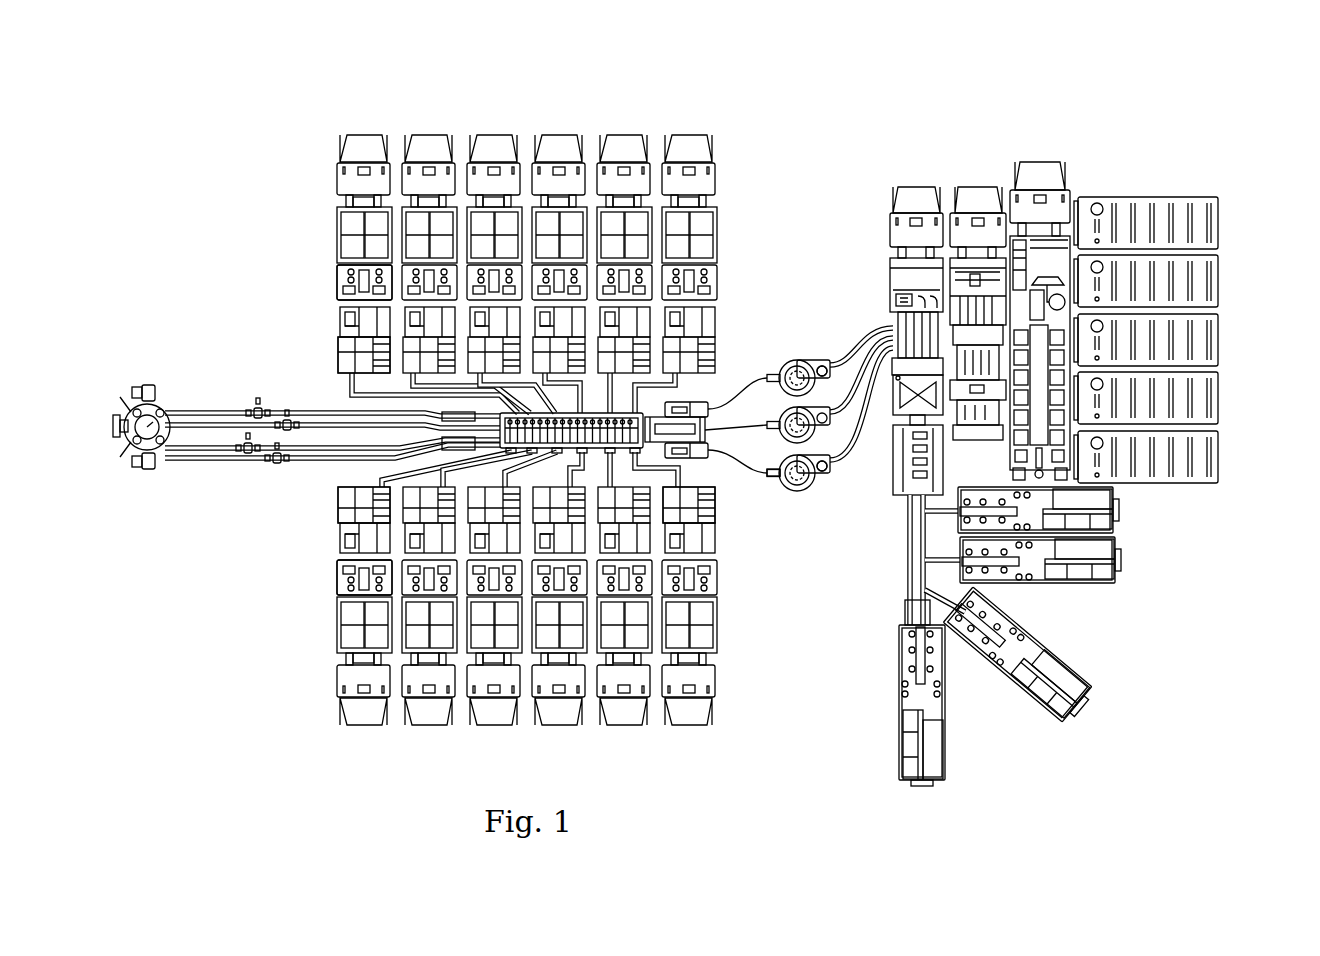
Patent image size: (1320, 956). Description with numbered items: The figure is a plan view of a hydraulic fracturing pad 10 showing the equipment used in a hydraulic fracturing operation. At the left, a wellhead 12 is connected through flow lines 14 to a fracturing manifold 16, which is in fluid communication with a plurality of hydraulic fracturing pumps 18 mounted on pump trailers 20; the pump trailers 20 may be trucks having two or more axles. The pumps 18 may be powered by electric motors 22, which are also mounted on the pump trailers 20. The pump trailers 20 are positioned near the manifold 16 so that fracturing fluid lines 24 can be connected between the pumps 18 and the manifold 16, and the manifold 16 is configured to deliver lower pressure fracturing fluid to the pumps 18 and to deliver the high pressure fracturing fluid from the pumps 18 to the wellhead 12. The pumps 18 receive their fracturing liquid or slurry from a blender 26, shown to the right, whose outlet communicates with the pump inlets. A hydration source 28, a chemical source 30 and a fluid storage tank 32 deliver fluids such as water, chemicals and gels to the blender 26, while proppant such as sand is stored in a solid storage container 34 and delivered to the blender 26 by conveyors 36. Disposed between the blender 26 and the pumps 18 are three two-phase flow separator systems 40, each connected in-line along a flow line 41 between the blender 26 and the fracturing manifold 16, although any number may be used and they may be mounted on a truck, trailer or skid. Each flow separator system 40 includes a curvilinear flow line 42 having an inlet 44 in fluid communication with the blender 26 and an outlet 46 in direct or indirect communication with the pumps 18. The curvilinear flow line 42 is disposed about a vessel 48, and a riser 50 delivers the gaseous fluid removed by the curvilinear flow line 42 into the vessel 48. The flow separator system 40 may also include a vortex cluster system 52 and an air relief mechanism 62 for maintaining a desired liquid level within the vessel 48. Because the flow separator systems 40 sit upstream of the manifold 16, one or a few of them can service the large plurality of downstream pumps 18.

The hydraulic fracturing pad 10 is at (1112, 148).
The wellhead 12 is at (180, 412).
The flow lines 14 is at (215, 411).
The fracturing manifold 16 is at (433, 440).
The hydraulic fracturing pumps 18 is at (362, 353).
The pump trailers 20 is at (695, 135).
The electric motors 22 is at (362, 292).
The fracturing fluid lines 24 is at (346, 392).
The blender 26 is at (915, 185).
The hydration source 28 is at (977, 185).
The chemical source 30 is at (1040, 160).
The fluid storage tank 32 is at (1218, 222).
The solid storage container 34 is at (1118, 530).
The conveyors 36 is at (905, 545).
The two-phase flow separator system 40 is at (785, 330).
The flow line 41 is at (758, 392).
The curvilinear flow line 42 is at (800, 495).
The inlet 44 is at (823, 366).
The outlet 46 is at (780, 378).
The vessel 48 is at (795, 492).
The riser 50 is at (822, 492).
The vortex cluster system 52 is at (775, 470).
The air relief mechanism 62 is at (820, 366).